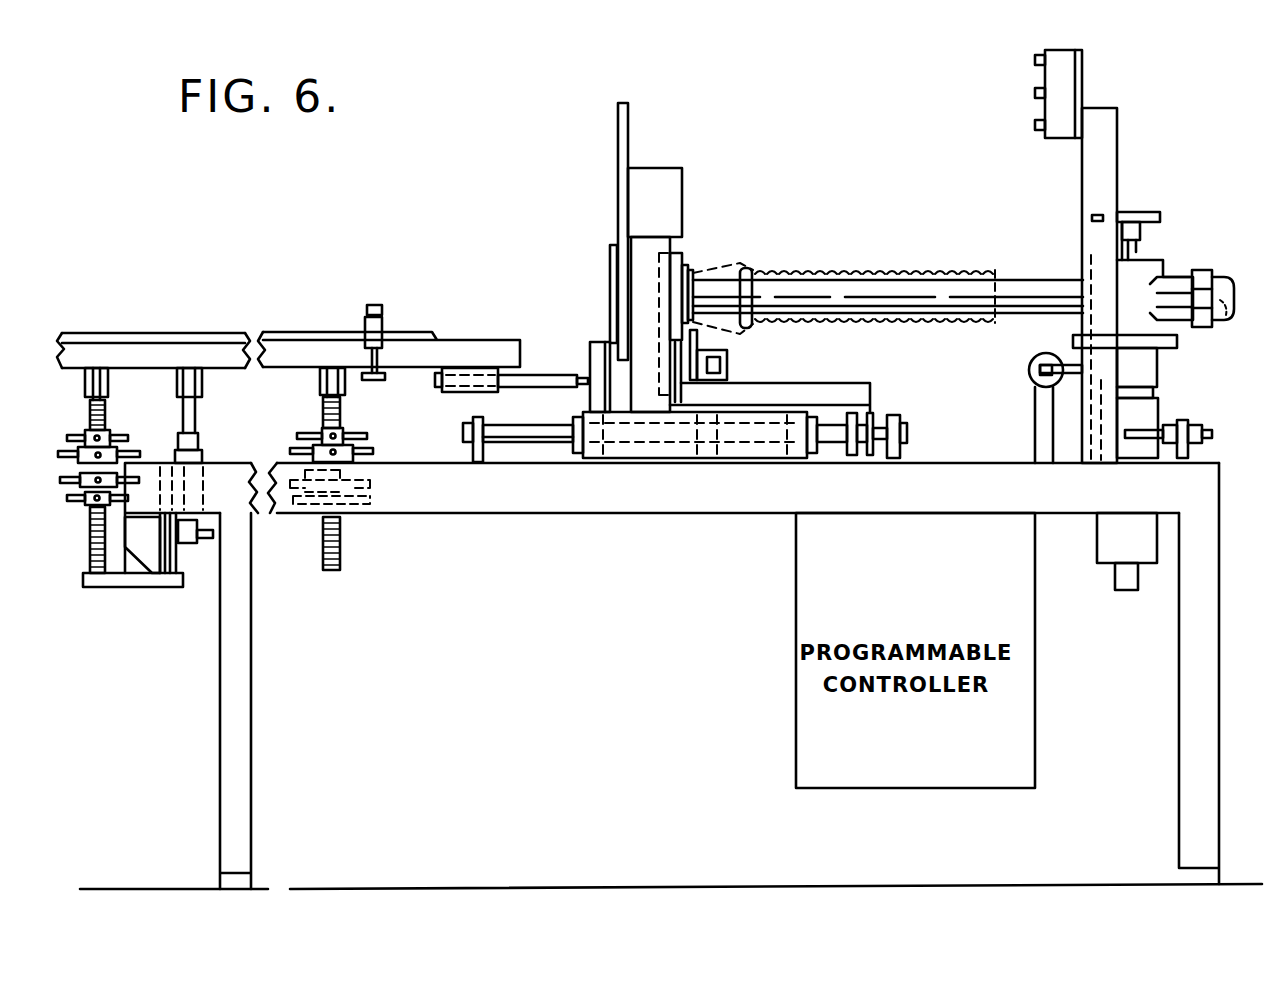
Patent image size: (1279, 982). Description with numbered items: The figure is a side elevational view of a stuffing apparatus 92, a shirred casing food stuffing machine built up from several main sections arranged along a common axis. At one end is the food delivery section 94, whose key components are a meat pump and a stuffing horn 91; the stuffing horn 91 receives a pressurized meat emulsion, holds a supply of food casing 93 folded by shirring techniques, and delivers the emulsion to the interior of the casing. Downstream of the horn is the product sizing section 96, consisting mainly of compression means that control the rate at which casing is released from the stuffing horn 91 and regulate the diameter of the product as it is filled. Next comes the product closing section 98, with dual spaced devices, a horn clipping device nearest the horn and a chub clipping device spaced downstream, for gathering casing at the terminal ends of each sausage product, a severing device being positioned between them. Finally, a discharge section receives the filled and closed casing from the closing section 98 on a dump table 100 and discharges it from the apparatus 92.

The dump table 100 is at (252, 300).
The product closing section 98 is at (603, 284).
The stuffing apparatus 92 is at (783, 144).
The product sizing section 96 is at (722, 251).
The food casing 93 is at (918, 232).
The stuffing horn 91 is at (1037, 280).
The food delivery section 94 is at (1189, 263).